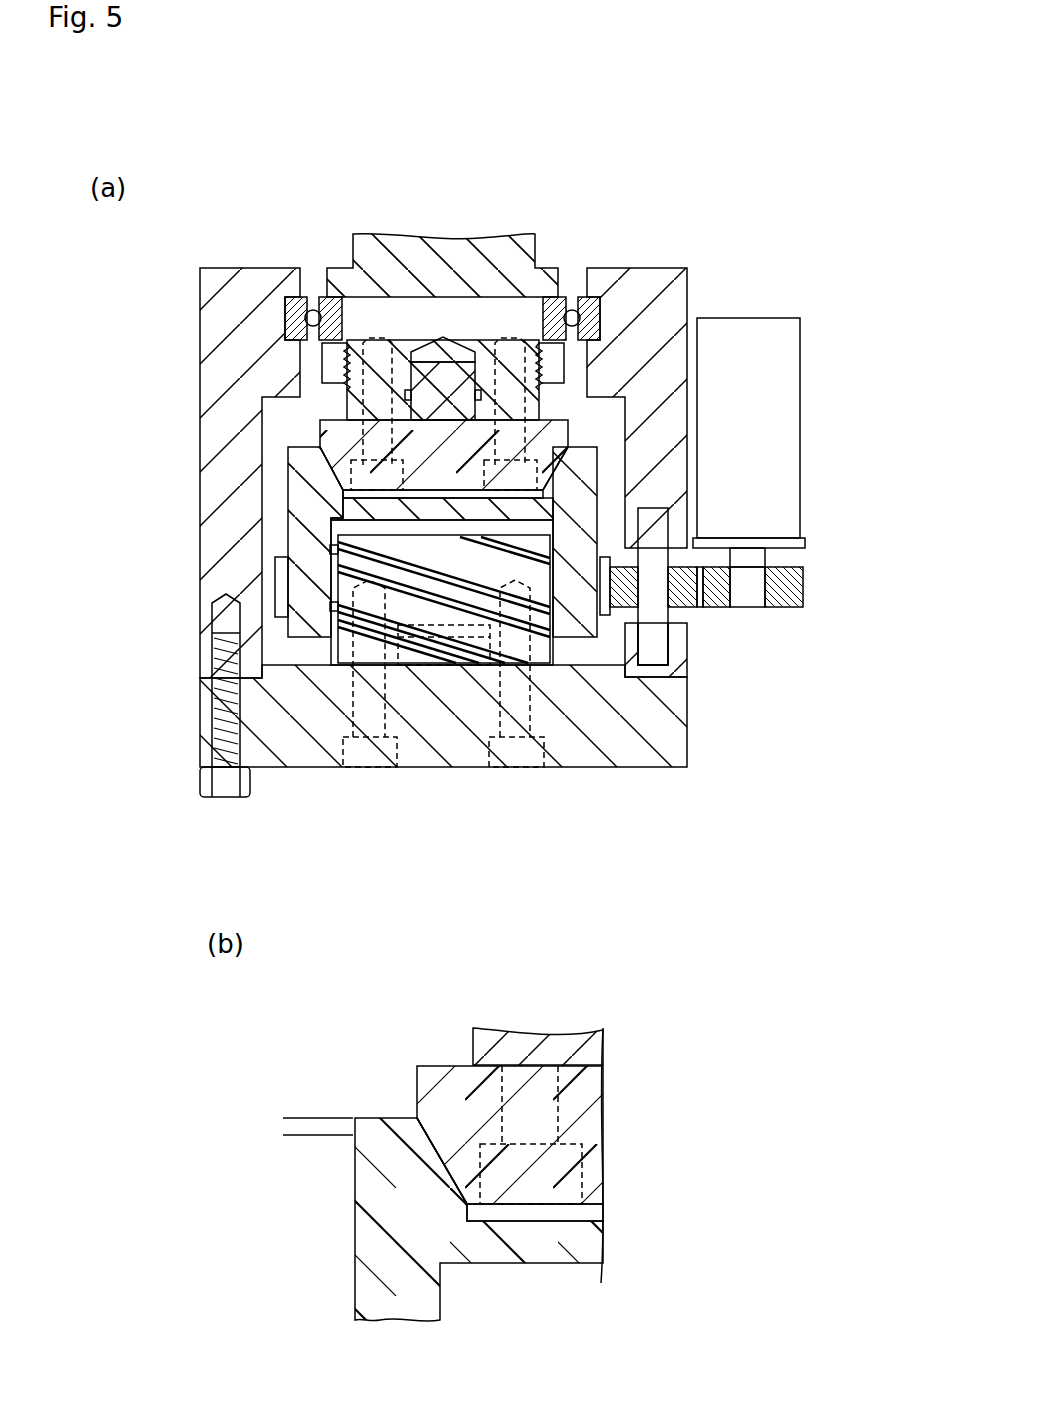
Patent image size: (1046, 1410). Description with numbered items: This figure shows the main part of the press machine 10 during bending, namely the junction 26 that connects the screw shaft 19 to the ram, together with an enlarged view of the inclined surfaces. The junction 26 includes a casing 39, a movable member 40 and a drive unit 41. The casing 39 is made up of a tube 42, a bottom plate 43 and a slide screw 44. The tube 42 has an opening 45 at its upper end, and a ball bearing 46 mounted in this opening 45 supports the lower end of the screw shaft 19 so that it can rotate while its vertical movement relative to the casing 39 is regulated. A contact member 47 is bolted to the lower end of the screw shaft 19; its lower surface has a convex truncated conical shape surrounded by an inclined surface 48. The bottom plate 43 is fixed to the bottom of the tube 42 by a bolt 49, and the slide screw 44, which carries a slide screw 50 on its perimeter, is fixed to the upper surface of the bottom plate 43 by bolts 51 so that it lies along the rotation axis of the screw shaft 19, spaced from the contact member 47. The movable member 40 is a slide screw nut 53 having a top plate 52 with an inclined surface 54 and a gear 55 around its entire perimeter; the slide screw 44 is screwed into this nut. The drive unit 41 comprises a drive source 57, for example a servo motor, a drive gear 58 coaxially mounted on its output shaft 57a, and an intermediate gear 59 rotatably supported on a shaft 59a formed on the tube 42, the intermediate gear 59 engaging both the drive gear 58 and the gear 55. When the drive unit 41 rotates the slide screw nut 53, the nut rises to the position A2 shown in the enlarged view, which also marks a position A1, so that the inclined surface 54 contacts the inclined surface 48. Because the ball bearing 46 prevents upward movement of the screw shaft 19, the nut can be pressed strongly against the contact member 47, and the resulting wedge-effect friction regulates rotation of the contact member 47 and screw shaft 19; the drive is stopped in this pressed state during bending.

The press machine 10 is at (615, 996).
The screw shaft 19 is at (526, 252).
The junction 26 is at (539, 623).
The casing 39 is at (400, 545).
The movable member 40 is at (343, 557).
The drive unit 41 is at (749, 496).
The tube 42 is at (210, 486).
The bottom plate 43 is at (332, 768).
The slide screw 44 is at (337, 657).
The opening 45 is at (315, 296).
The ball bearing 46 is at (292, 296).
The contact member 47 is at (322, 432).
The inclined surface 48 is at (540, 492).
The bolt 49 is at (228, 798).
The slide screw 50 is at (293, 527).
The bolts 51 is at (368, 770).
The top plate 52 is at (412, 509).
The slide screw nut 53 is at (302, 638).
The inclined surface 54 is at (347, 458).
The gear 55 is at (607, 620).
The drive source 57 is at (768, 430).
The output shaft 57a is at (748, 607).
The drive gear 58 is at (785, 607).
The intermediate gear 59 is at (690, 608).
The shaft 59a is at (652, 667).
The axis A1 is at (300, 1138).
The position A2 is at (300, 1118).